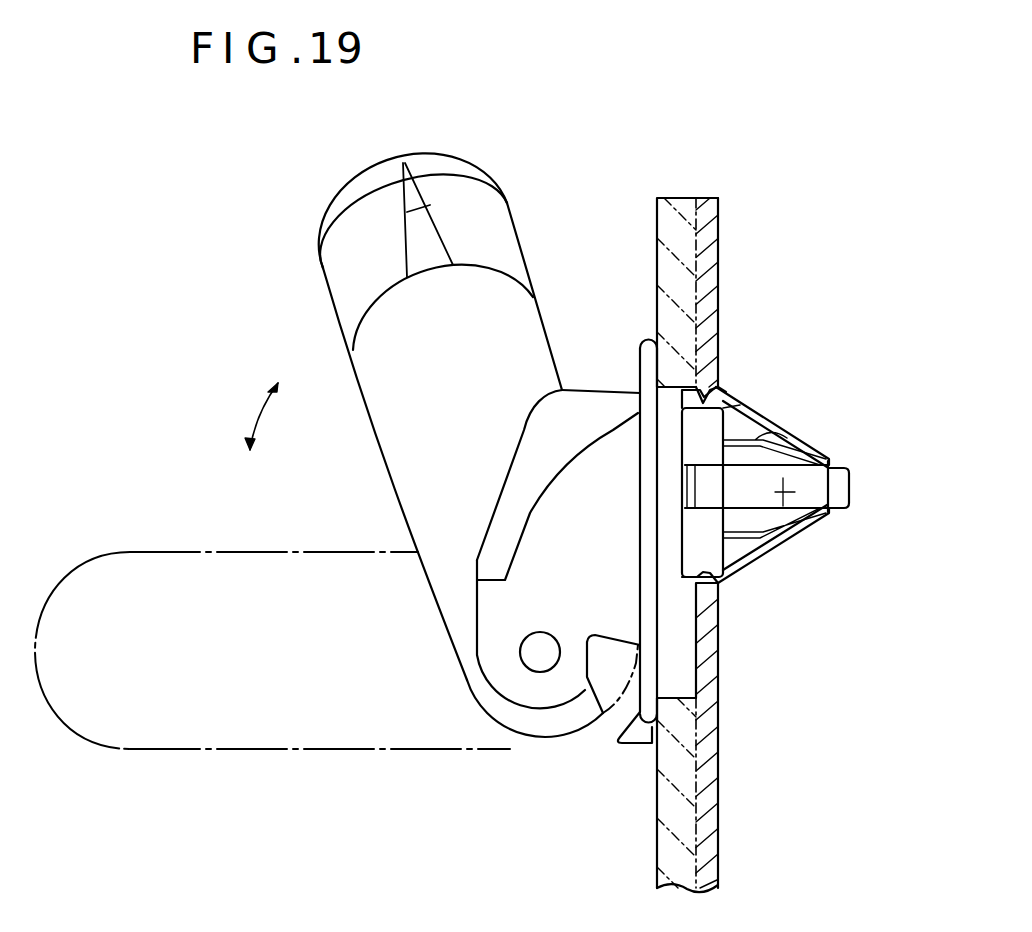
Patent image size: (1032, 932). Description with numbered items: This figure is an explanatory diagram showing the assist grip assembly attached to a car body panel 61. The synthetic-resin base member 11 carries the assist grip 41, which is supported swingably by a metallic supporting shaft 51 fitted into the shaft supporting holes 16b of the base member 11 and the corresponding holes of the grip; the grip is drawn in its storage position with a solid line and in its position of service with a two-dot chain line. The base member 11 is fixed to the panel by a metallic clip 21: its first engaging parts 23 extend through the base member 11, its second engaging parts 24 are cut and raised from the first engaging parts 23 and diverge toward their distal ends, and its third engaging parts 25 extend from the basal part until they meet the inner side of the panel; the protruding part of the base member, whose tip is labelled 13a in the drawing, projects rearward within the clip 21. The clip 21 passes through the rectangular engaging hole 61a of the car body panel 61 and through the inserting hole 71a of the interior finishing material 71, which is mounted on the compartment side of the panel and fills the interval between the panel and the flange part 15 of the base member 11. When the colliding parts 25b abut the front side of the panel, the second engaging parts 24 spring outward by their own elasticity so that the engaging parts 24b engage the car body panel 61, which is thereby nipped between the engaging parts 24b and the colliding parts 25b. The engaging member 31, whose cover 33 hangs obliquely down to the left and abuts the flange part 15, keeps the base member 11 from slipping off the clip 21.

The base member 11 is at (481, 627).
The pin head 13a is at (846, 494).
The flange part 15 is at (650, 680).
The shaft supporting hole 16b is at (522, 660).
The clip 21 is at (803, 484).
The first engaging part 23 is at (786, 433).
The second engaging part 24 is at (762, 412).
The engaging part 24b is at (746, 401).
The third engaging part 25 is at (830, 509).
The colliding part 25b is at (699, 488).
The engaging member 31 is at (496, 505).
The cover 33 is at (535, 473).
The assist grip 41 is at (353, 229).
The supporting shaft 51 is at (545, 667).
The car body panel 61 is at (704, 242).
The engaging hole 61a is at (701, 387).
The interior finishing material 71 is at (676, 261).
The inserting hole 71a is at (655, 397).